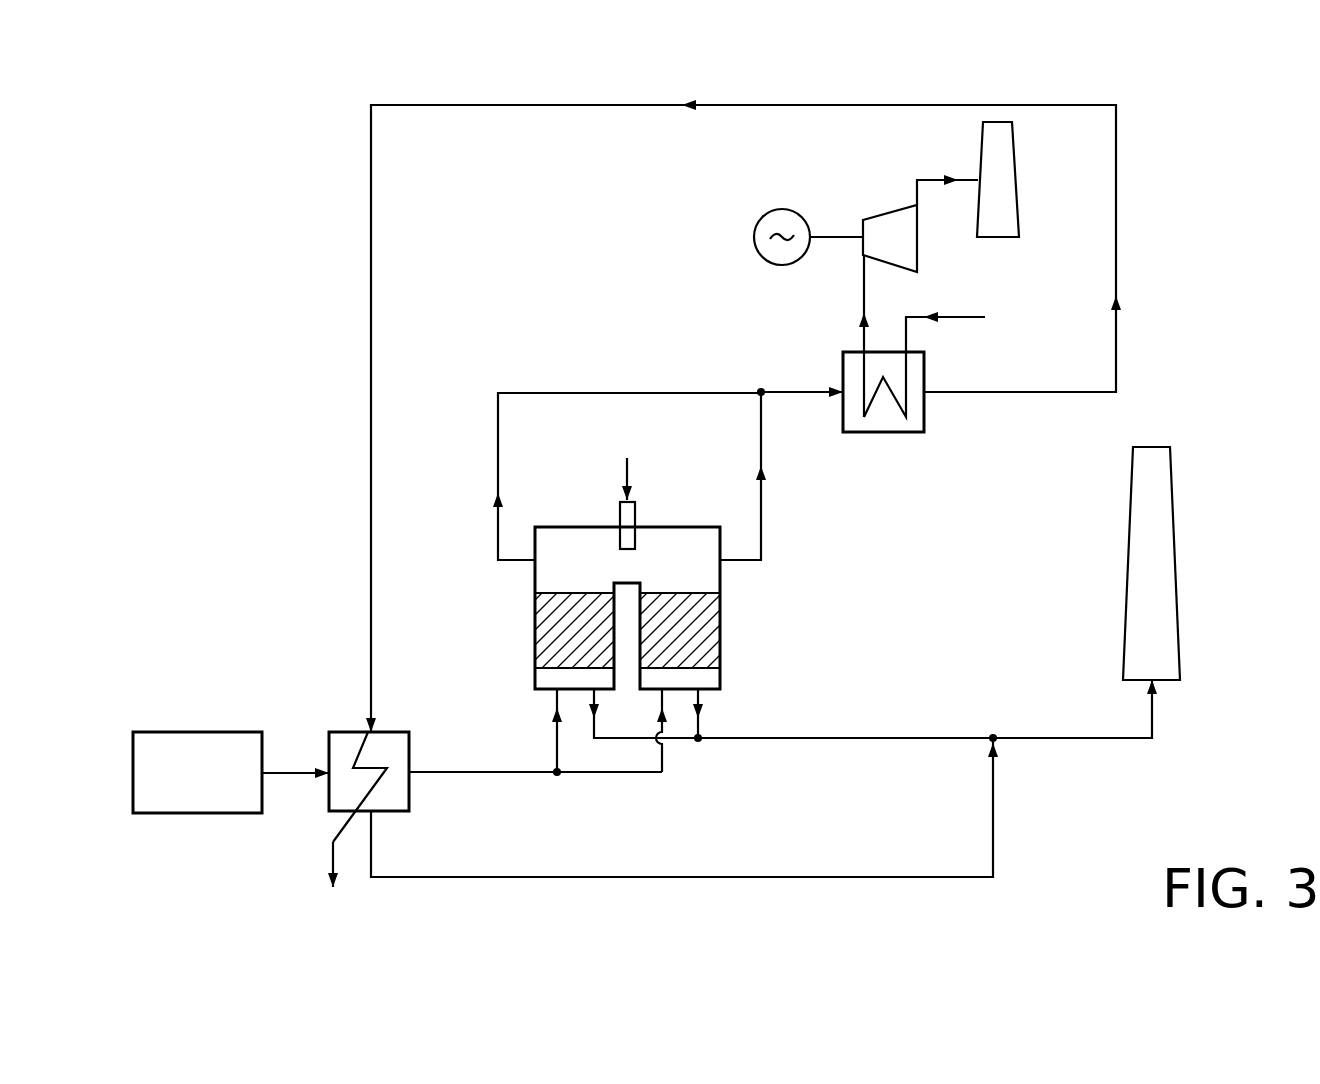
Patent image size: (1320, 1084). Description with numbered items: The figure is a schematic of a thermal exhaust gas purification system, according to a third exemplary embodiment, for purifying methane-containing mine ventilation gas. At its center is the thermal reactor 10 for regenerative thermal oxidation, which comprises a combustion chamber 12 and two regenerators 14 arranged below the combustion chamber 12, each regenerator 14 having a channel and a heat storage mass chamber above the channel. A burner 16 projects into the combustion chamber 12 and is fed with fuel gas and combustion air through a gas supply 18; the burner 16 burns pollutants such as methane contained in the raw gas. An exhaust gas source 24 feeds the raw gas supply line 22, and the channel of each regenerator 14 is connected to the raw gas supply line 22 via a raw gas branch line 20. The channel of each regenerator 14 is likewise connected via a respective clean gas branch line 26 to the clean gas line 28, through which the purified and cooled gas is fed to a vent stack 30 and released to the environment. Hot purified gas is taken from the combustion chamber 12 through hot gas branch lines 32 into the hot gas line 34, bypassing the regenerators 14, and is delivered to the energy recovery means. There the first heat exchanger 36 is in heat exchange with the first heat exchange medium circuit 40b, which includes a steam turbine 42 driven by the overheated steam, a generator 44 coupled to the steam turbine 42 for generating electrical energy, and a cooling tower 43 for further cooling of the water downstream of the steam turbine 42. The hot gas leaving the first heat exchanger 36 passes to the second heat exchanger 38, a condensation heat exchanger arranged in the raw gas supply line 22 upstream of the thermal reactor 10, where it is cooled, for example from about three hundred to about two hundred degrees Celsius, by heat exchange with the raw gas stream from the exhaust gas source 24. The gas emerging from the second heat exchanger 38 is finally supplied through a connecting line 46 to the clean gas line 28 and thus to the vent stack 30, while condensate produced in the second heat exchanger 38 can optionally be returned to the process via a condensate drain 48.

The thermal reactor 10 is at (641, 564).
The combustion chamber 12 is at (563, 533).
The regenerator 14 is at (560, 626).
The burner 16 is at (628, 520).
The gas supply 18 is at (630, 475).
The raw gas branch line 20 is at (557, 738).
The raw gas supply line 22 is at (292, 775).
The exhaust gas source 24 is at (198, 732).
The clean gas branch line 26 is at (596, 733).
The clean gas line 28 is at (910, 745).
The vent stack 30 is at (1133, 553).
The hot gas branch line 32 is at (498, 446).
The hot gas line 34 is at (788, 390).
The first heat exchanger 36 is at (880, 432).
The second heat exchanger 38 is at (343, 732).
The first heat exchange medium circuit 40b is at (928, 291).
The steam turbine 42 is at (886, 217).
The cooling tower 43 is at (1018, 185).
The generator 44 is at (770, 218).
The connecting line 46 is at (699, 880).
The condensate drain 48 is at (333, 858).